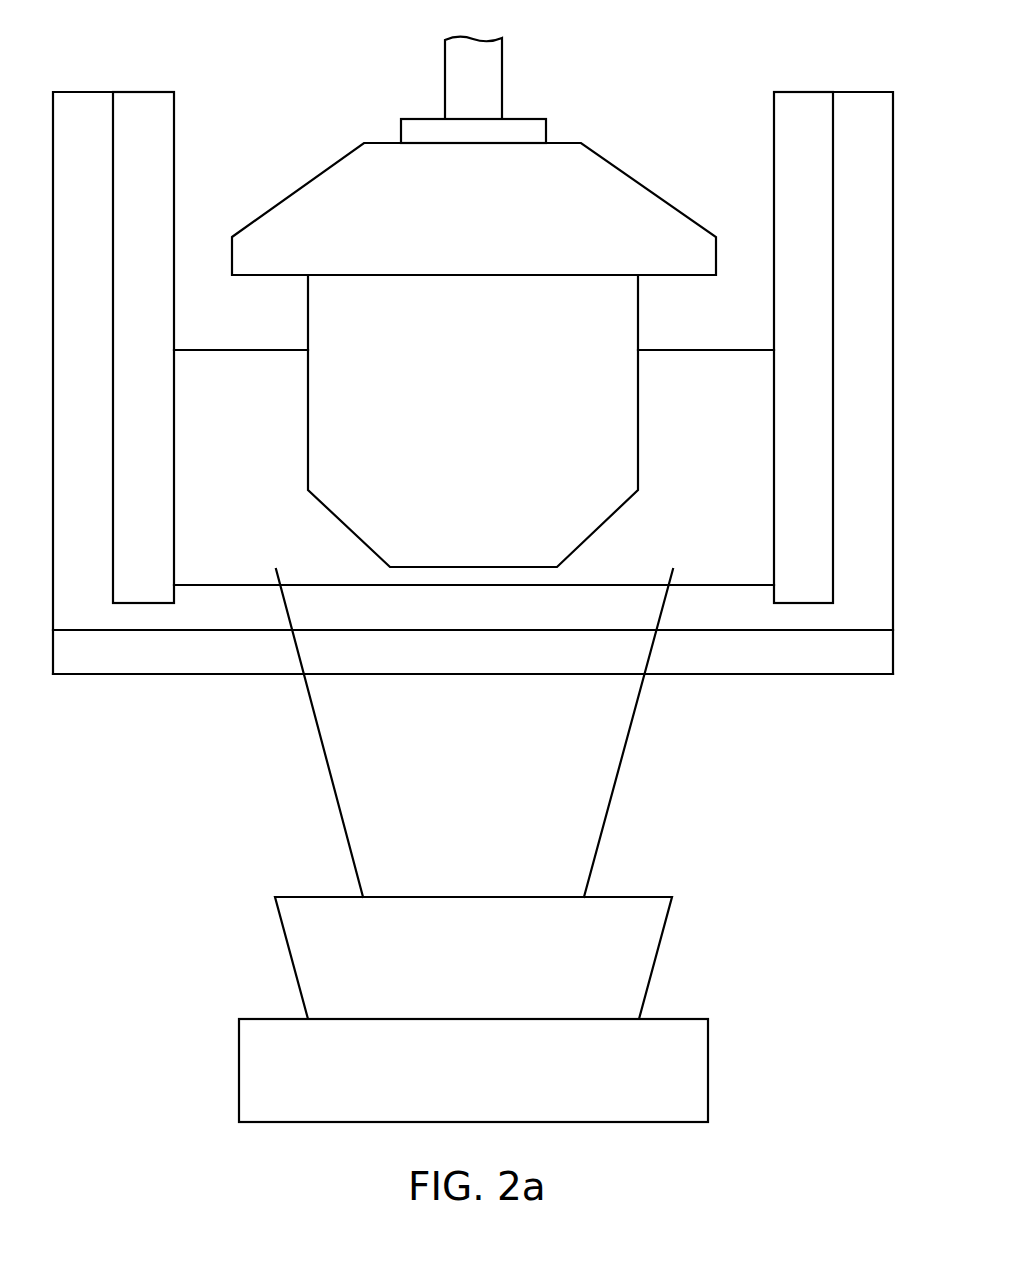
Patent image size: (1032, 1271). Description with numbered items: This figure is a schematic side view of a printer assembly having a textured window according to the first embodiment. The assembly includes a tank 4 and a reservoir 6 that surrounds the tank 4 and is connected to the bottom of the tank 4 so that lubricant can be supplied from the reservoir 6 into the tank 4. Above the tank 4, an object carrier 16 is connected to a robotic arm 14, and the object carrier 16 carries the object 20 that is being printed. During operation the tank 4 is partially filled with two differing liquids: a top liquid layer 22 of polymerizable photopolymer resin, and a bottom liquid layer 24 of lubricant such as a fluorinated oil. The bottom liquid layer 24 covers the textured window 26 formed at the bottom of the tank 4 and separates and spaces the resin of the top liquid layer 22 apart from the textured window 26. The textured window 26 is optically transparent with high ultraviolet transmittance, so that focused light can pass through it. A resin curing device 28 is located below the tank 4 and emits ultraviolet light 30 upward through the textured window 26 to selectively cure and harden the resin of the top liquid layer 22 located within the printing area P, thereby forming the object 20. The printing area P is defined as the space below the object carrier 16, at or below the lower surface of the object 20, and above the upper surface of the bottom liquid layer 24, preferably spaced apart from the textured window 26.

The tank 4 is at (143, 121).
The reservoir 6 is at (83, 121).
The robotic arm 14 is at (502, 79).
The object carrier 16 is at (638, 180).
The object 20 is at (638, 314).
The top liquid layer 22 is at (726, 440).
The bottom liquid layer 24 is at (222, 595).
The textured window 26 is at (726, 653).
The resin curing device 28 is at (673, 1066).
The ultraviolet light 30 is at (620, 772).
The printing area P is at (533, 576).